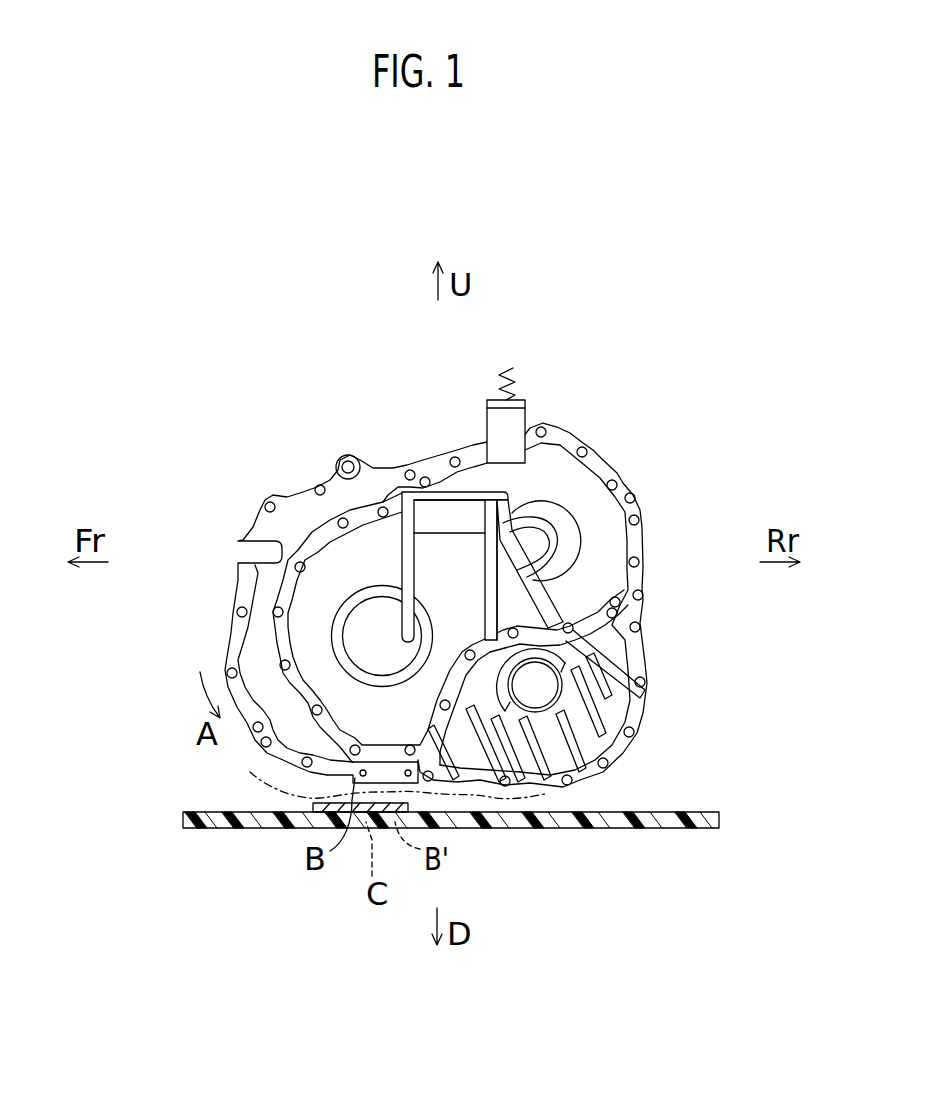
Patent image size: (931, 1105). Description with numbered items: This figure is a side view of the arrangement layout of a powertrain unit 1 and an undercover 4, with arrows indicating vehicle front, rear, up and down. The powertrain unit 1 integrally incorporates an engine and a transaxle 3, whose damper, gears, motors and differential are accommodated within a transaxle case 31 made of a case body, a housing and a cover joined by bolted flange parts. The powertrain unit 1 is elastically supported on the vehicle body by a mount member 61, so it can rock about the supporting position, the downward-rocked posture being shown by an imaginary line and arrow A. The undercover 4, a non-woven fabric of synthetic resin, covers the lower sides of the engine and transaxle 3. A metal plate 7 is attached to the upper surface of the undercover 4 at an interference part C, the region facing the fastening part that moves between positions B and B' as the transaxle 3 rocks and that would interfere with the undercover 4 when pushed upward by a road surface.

The powertrain unit 1 is at (291, 484).
The transaxle 3 is at (428, 457).
The transaxle case 31 is at (544, 488).
The mount member 61 is at (488, 428).
The metal plate 7 is at (312, 800).
The undercover 4 is at (573, 841).